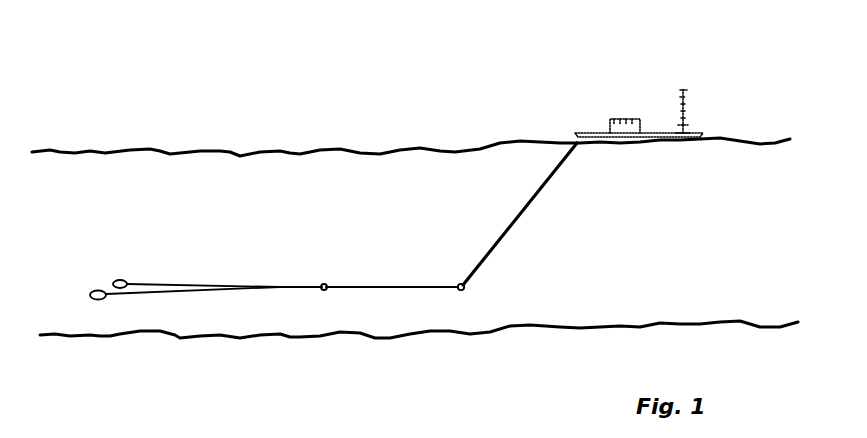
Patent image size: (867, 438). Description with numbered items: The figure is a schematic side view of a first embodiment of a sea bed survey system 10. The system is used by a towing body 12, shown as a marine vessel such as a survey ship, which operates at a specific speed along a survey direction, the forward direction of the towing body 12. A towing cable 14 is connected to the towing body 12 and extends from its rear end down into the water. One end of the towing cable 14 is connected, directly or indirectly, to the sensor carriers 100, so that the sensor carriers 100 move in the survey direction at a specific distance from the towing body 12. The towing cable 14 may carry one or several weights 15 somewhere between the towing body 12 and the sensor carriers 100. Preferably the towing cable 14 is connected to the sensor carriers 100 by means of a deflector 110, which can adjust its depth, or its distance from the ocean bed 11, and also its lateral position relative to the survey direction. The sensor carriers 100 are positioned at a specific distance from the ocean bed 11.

The sea bed survey system 10 is at (497, 85).
The ocean bed 11 is at (715, 322).
The towing body 12 is at (628, 118).
The towing cable 14 is at (522, 213).
The weight 15 is at (465, 286).
The sensor carriers 100 is at (136, 284).
The deflector 110 is at (325, 285).